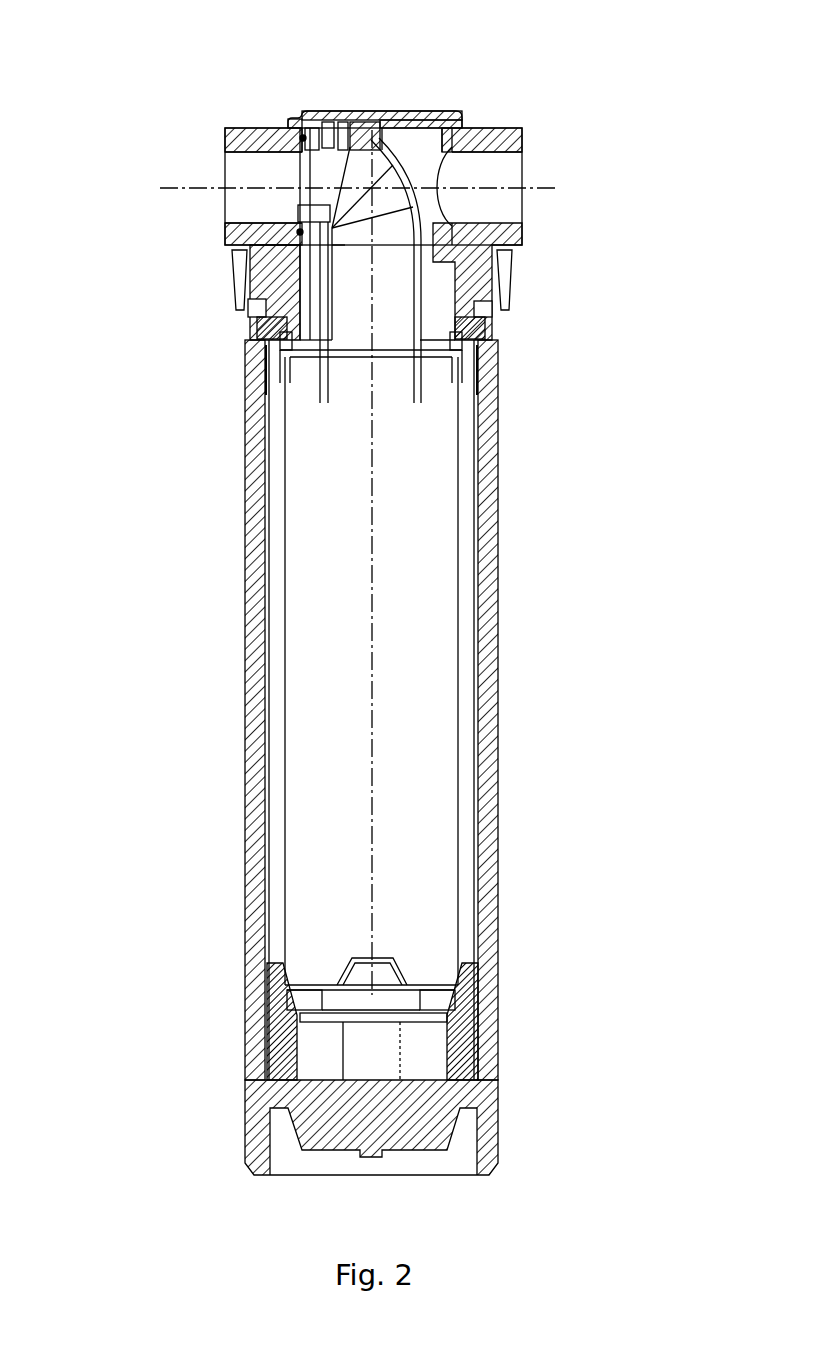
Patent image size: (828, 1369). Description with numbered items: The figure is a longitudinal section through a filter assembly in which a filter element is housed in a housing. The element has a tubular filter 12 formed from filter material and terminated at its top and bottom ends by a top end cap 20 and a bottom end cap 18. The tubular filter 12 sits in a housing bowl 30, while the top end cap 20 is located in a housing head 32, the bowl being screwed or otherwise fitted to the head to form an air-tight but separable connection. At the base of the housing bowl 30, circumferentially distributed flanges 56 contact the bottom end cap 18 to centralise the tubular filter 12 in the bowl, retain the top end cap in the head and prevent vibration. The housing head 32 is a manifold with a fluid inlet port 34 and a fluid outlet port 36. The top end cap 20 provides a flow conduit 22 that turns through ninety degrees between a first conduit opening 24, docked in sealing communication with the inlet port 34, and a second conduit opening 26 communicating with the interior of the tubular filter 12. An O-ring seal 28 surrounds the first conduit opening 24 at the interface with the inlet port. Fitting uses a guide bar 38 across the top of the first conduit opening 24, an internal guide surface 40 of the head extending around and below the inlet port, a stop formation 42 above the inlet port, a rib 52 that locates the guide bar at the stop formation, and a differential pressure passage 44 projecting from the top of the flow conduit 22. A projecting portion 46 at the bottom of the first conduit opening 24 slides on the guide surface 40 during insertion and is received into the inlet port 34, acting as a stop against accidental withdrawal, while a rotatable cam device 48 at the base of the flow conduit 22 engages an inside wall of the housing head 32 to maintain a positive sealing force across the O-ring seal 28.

The tubular filter 12 is at (460, 618).
The bottom end cap 18 is at (322, 978).
The top end cap 20 is at (410, 165).
The flow conduit 22 is at (392, 282).
The first conduit opening 24 is at (315, 170).
The second conduit opening 26 is at (330, 363).
The O-ring seal 28 is at (303, 138).
The housing bowl 30 is at (245, 700).
The housing head 32 is at (418, 110).
The fluid inlet port 34 is at (290, 199).
The fluid outlet port 36 is at (462, 175).
The guide bar 38 is at (300, 126).
The internal guide surface 40 is at (280, 305).
The stop formation 42 is at (308, 126).
The differential pressure passage 44 is at (352, 128).
The projecting portion 46 is at (300, 216).
The rotatable cam device 48 is at (470, 348).
The rib 52 is at (334, 126).
The flanges 56 is at (275, 1020).